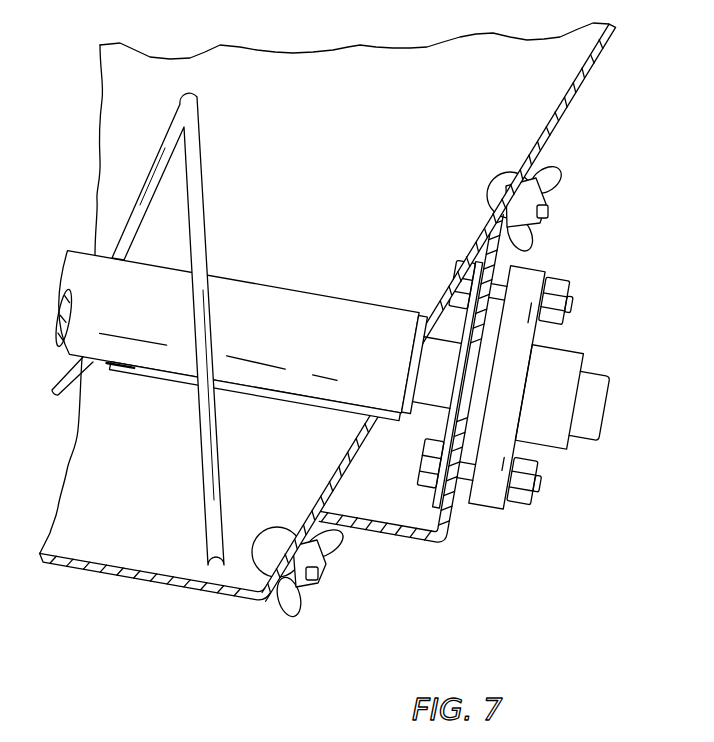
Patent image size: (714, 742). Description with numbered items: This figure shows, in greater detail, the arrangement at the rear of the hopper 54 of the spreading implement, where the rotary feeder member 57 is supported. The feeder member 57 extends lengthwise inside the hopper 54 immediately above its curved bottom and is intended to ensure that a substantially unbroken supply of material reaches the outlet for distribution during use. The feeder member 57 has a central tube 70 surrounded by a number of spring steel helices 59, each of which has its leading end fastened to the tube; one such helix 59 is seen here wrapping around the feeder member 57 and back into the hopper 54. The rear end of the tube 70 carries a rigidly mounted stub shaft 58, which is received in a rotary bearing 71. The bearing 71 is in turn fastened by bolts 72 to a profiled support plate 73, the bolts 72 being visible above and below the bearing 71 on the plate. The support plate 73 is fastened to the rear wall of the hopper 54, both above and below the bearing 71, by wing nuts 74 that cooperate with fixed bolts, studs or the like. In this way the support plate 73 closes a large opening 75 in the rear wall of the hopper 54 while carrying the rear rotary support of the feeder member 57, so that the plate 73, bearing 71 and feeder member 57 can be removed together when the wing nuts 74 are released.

The hopper 54 is at (303, 58).
The rotary feeder member 57 is at (317, 273).
The stub shaft 58 is at (182, 380).
The spring steel helices 59 is at (195, 168).
The tube 70 is at (432, 353).
The rotary bearing 71 is at (545, 337).
The bolts 72 is at (558, 283).
The profiled support plate 73 is at (588, 78).
The wing nuts 74 is at (563, 173).
The opening 75 is at (445, 297).